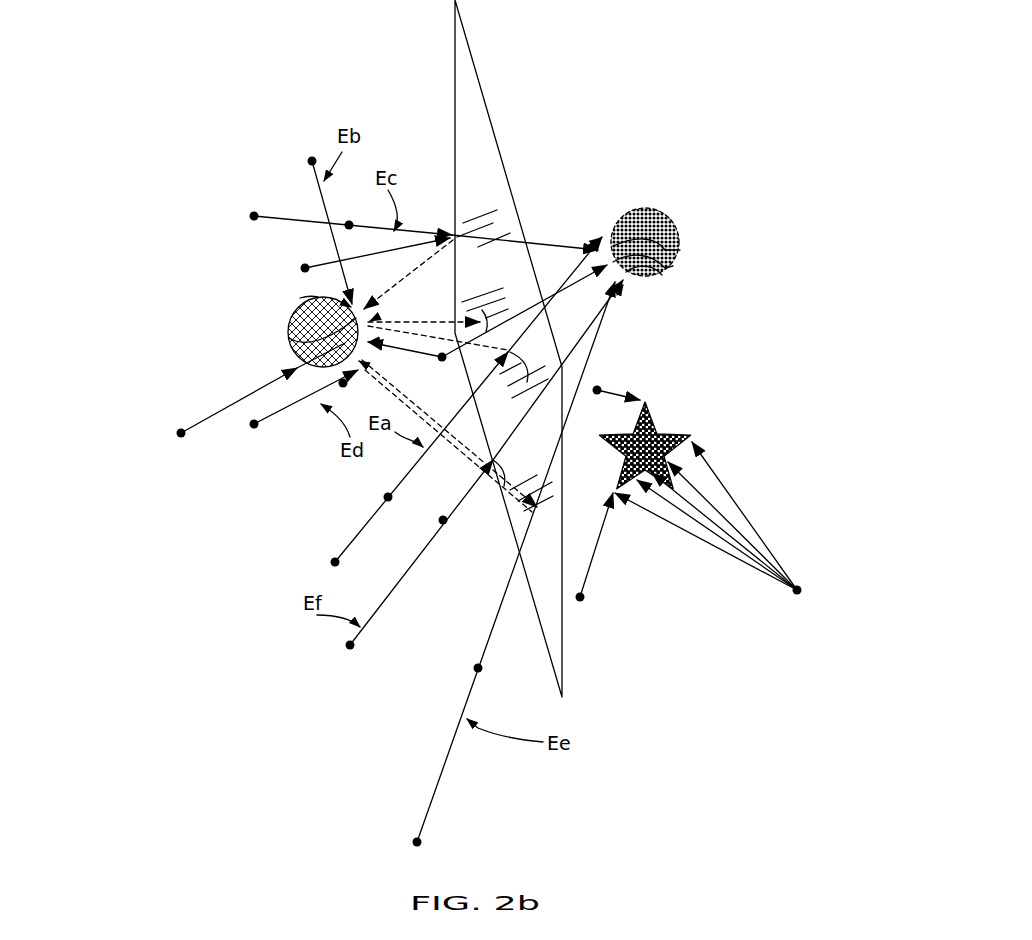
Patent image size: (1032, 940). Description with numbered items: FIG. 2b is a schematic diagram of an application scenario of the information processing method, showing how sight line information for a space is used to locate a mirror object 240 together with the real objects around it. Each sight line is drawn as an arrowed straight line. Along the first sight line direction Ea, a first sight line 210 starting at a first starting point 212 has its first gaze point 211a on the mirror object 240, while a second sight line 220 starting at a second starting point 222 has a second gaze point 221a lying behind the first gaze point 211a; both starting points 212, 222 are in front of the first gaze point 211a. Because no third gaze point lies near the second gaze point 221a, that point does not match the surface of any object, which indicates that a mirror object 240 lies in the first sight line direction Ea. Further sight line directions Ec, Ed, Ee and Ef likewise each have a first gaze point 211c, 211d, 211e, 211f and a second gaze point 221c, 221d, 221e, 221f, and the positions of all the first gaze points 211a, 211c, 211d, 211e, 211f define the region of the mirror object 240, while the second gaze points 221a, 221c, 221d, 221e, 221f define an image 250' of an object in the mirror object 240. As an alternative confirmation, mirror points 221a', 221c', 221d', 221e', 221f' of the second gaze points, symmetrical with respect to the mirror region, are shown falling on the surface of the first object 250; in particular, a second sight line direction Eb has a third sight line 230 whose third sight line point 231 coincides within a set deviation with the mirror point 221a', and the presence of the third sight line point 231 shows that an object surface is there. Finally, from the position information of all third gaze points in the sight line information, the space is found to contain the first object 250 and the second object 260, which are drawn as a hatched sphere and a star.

The mirror object 240 is at (455, 95).
The third sight line 230 is at (323, 200).
The first object 250 is at (301, 303).
The third sight line point 231 is at (302, 302).
The mirror point 221a' is at (264, 320).
The mirror point 221c' is at (267, 340).
The mirror point 221d' is at (264, 365).
The mirror point 221e' is at (259, 387).
The mirror point 221f' is at (244, 413).
The first sight line 210 is at (360, 530).
The first starting point 212 is at (332, 561).
The second starting point 222 is at (391, 497).
The first gaze point 211a is at (518, 392).
The first gaze point 211c is at (456, 236).
The first gaze point 211d is at (476, 318).
The first gaze point 211e is at (540, 500).
The first gaze point 211f is at (496, 461).
The second gaze point 221a is at (564, 219).
The second gaze point 221c is at (672, 232).
The second gaze point 221d is at (679, 269).
The second gaze point 221e is at (669, 294).
The second gaze point 221f is at (659, 320).
The image of an object 250' is at (637, 209).
The second sight line 220 is at (530, 303).
The second object 260 is at (688, 436).